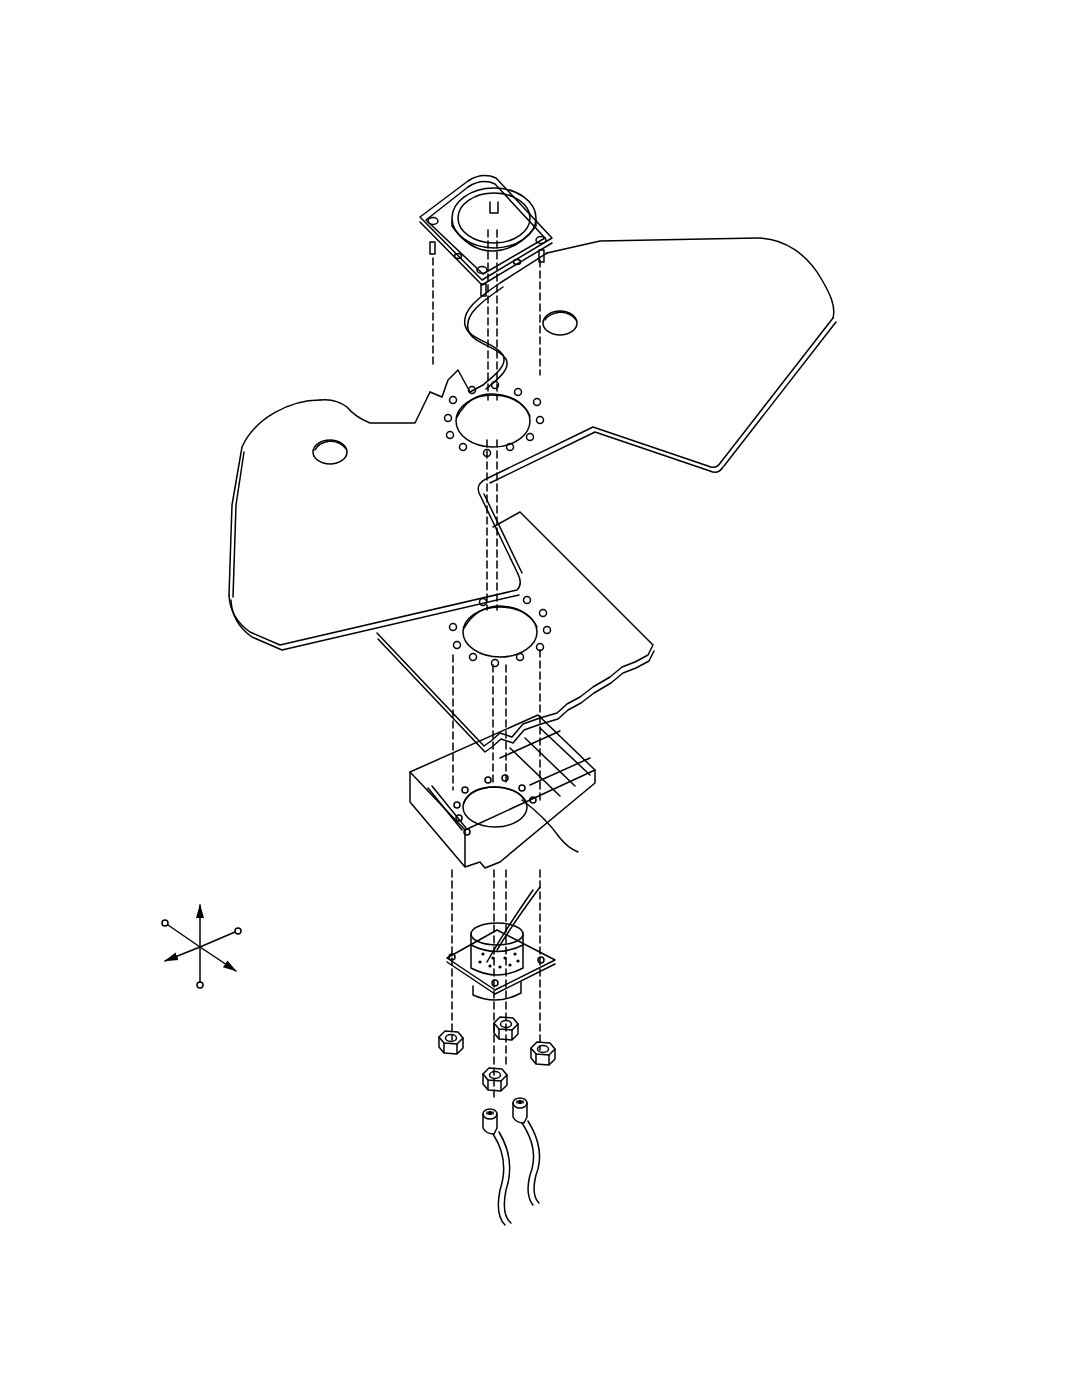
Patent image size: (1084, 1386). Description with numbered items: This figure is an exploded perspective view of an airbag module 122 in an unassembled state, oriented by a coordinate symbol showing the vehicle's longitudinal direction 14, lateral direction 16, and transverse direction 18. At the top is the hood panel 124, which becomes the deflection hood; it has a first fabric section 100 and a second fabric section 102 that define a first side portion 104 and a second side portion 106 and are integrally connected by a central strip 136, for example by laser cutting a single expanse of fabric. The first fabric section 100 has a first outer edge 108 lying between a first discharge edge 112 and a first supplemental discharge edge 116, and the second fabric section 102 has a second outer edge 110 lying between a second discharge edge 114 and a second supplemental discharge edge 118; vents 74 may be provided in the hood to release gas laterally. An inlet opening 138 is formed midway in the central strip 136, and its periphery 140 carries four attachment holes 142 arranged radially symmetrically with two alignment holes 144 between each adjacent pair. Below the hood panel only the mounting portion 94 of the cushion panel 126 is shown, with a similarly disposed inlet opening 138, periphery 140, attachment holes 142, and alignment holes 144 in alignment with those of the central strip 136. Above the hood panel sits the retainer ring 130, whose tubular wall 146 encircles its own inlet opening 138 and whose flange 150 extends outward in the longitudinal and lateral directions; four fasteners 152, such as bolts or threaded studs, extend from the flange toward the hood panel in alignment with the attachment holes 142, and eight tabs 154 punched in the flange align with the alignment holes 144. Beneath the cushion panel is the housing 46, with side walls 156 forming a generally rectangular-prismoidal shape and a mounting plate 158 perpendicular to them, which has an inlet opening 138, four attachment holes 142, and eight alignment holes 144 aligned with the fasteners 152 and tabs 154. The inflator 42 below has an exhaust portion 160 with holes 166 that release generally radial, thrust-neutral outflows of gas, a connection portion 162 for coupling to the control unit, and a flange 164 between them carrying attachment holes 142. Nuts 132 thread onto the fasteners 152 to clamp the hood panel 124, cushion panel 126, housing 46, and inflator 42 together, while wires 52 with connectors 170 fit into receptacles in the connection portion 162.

The longitudinal direction 14 is at (222, 968).
The lateral direction 16 is at (220, 945).
The transverse direction 18 is at (205, 928).
The inflator 42 is at (568, 968).
The housing 46 is at (600, 815).
The wires 52 is at (520, 1180).
The vents 74 is at (572, 324).
The mounting portion 94 is at (630, 636).
The first fabric section 100 is at (212, 592).
The second fabric section 102 is at (803, 248).
The first side portion 104 is at (322, 580).
The second side portion 106 is at (696, 338).
The first outer edge 108 is at (235, 520).
The second outer edge 110 is at (662, 238).
The first discharge edge 112 is at (522, 558).
The second discharge edge 114 is at (650, 455).
The first supplemental discharge edge 116 is at (358, 405).
The second supplemental discharge edge 118 is at (463, 338).
The airbag module 122 is at (772, 95).
The hood panel 124 is at (716, 226).
The cushion panel 126 is at (665, 647).
The retainer ring 130 is at (525, 178).
The nuts 132 is at (556, 1055).
The central strip 136 is at (566, 450).
The inlet opening 138 is at (512, 207).
The periphery 140 is at (428, 432).
The attachment holes 142 is at (444, 417).
The alignment holes 144 is at (470, 390).
The tubular wall 146 is at (458, 196).
The flange 150 is at (548, 221).
The fasteners 152 is at (492, 182).
The tabs 154 is at (440, 280).
The side walls 156 is at (600, 790).
The mounting plate 158 is at (438, 810).
The exhaust portion 160 is at (515, 935).
The connection portion 162 is at (472, 998).
The flange 164 is at (460, 932).
The holes 166 is at (542, 898).
The connectors 170 is at (524, 1103).